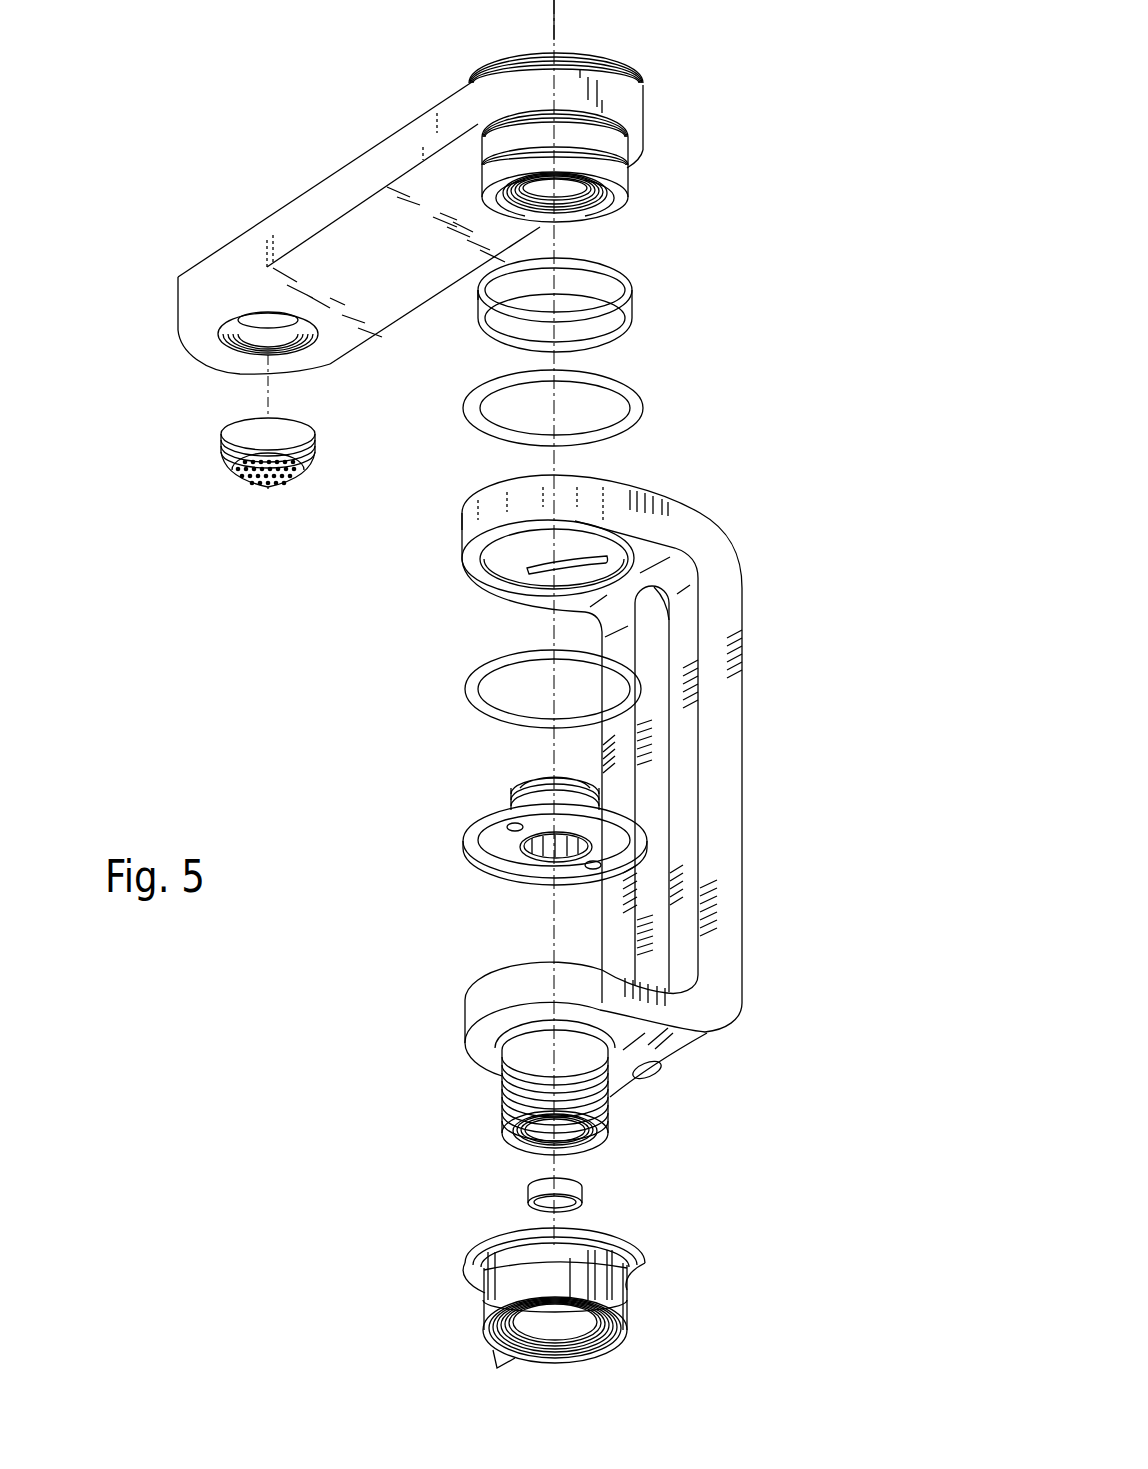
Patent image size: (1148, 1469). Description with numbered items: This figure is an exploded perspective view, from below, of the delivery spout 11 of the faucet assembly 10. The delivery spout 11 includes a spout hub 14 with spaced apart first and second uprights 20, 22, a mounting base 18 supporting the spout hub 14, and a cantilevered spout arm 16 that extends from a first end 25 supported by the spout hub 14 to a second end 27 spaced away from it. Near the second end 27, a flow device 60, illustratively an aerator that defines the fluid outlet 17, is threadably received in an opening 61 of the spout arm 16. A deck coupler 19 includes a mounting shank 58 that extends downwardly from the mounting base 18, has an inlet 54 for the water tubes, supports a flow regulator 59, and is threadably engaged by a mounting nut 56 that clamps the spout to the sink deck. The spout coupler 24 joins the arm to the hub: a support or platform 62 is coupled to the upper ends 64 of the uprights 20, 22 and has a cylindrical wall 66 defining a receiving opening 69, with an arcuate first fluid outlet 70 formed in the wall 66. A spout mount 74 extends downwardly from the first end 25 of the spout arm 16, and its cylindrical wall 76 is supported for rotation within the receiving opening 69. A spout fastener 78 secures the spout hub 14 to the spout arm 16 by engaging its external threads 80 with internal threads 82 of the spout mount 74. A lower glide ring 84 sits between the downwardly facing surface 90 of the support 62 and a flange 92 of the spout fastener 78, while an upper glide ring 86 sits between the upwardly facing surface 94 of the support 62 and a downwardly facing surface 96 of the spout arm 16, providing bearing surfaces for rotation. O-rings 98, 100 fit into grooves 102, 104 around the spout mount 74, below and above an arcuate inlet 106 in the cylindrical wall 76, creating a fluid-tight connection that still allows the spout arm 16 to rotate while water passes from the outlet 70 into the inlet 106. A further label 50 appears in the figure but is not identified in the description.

The faucet assembly 10 is at (890, 114).
The delivery spout 11 is at (858, 292).
The spout hub 14 is at (812, 718).
The spout arm 16 is at (238, 213).
The fluid outlet 17 is at (246, 500).
The mounting base 18 is at (446, 1000).
The deck coupler 19 is at (724, 1145).
The first upright 20 is at (595, 927).
The second upright 22 is at (764, 867).
The spout coupler 24 is at (714, 510).
The first end 25 is at (620, 60).
The second end 27 is at (163, 272).
The central axis 50 is at (548, 28).
The inlet 54 is at (600, 1162).
The mounting nut 56 is at (650, 1312).
The mounting shank 58 is at (488, 1112).
The flow regulator 59 is at (520, 1200).
The flow device 60 is at (222, 467).
The opening 61 is at (228, 347).
The support 62 is at (620, 487).
The upper ends 64 is at (770, 565).
The cylindrical wall 66 is at (490, 546).
The receiving opening 69 is at (495, 577).
The first fluid outlet 70 is at (540, 582).
The spout mount 74 is at (626, 216).
The cylindrical wall 76 is at (594, 146).
The spout fastener 78 is at (445, 845).
The external threads 80 is at (504, 795).
The internal threads 82 is at (583, 208).
The lower glide ring 84 is at (455, 688).
The upper glide ring 86 is at (652, 398).
The downwardly facing surface 90 is at (497, 563).
The flange 92 is at (497, 815).
The upwardly facing surface 94 is at (478, 515).
The downwardly facing surface 96 is at (640, 160).
The o-ring 98 is at (620, 333).
The o-ring 100 is at (477, 294).
The groove 102 is at (632, 183).
The groove 104 is at (498, 127).
The arcuate inlet 106 is at (474, 162).